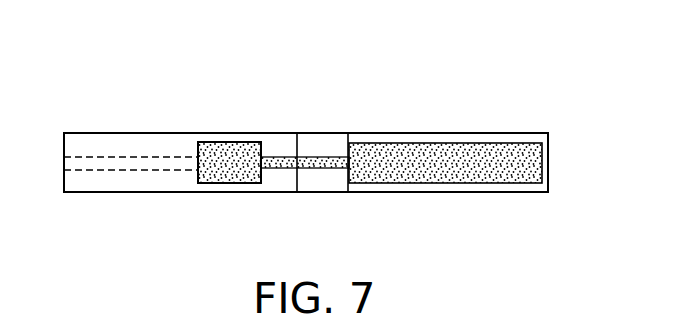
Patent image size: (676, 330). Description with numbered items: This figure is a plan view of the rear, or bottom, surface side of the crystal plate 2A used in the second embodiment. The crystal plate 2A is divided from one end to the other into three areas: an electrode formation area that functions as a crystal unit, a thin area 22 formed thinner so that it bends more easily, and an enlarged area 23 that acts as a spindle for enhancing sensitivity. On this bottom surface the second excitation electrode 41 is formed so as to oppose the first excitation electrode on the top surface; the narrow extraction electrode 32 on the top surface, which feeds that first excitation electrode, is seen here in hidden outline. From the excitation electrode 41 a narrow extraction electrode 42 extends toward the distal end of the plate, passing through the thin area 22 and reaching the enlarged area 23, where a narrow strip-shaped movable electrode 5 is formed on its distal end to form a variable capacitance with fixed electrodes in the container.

The crystal plate 2A is at (284, 64).
The movable electrode 5 is at (497, 142).
The thin area 22 is at (327, 133).
The enlarged area 23 is at (422, 142).
The extraction electrode 32 is at (119, 157).
The second excitation electrode 41 is at (233, 142).
The extraction electrode 42 is at (320, 168).